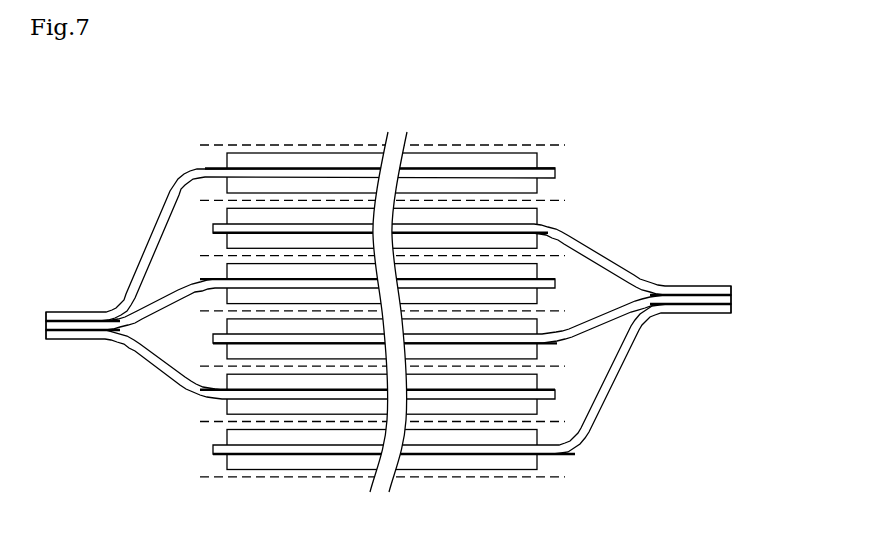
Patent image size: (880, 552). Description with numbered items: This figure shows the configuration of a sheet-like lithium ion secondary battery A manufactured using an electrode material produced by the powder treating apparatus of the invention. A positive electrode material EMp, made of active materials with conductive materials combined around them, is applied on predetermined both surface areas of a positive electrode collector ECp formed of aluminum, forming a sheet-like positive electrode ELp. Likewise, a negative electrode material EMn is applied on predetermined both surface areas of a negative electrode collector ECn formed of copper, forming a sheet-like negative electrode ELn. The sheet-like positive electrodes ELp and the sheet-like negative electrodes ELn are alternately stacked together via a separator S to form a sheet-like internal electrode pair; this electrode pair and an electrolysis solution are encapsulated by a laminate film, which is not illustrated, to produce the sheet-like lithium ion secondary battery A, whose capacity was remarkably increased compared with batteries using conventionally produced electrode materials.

The sheet-like lithium ion secondary battery A is at (389, 285).
The positive electrode collector ECp is at (503, 232).
The negative electrode collector ECn is at (293, 392).
The positive electrode material EMp is at (532, 334).
The negative electrode material EMn is at (237, 294).
The sheet-like positive electrode ELp is at (702, 285).
The sheet-like negative electrode ELn is at (83, 311).
The separator S is at (562, 370).